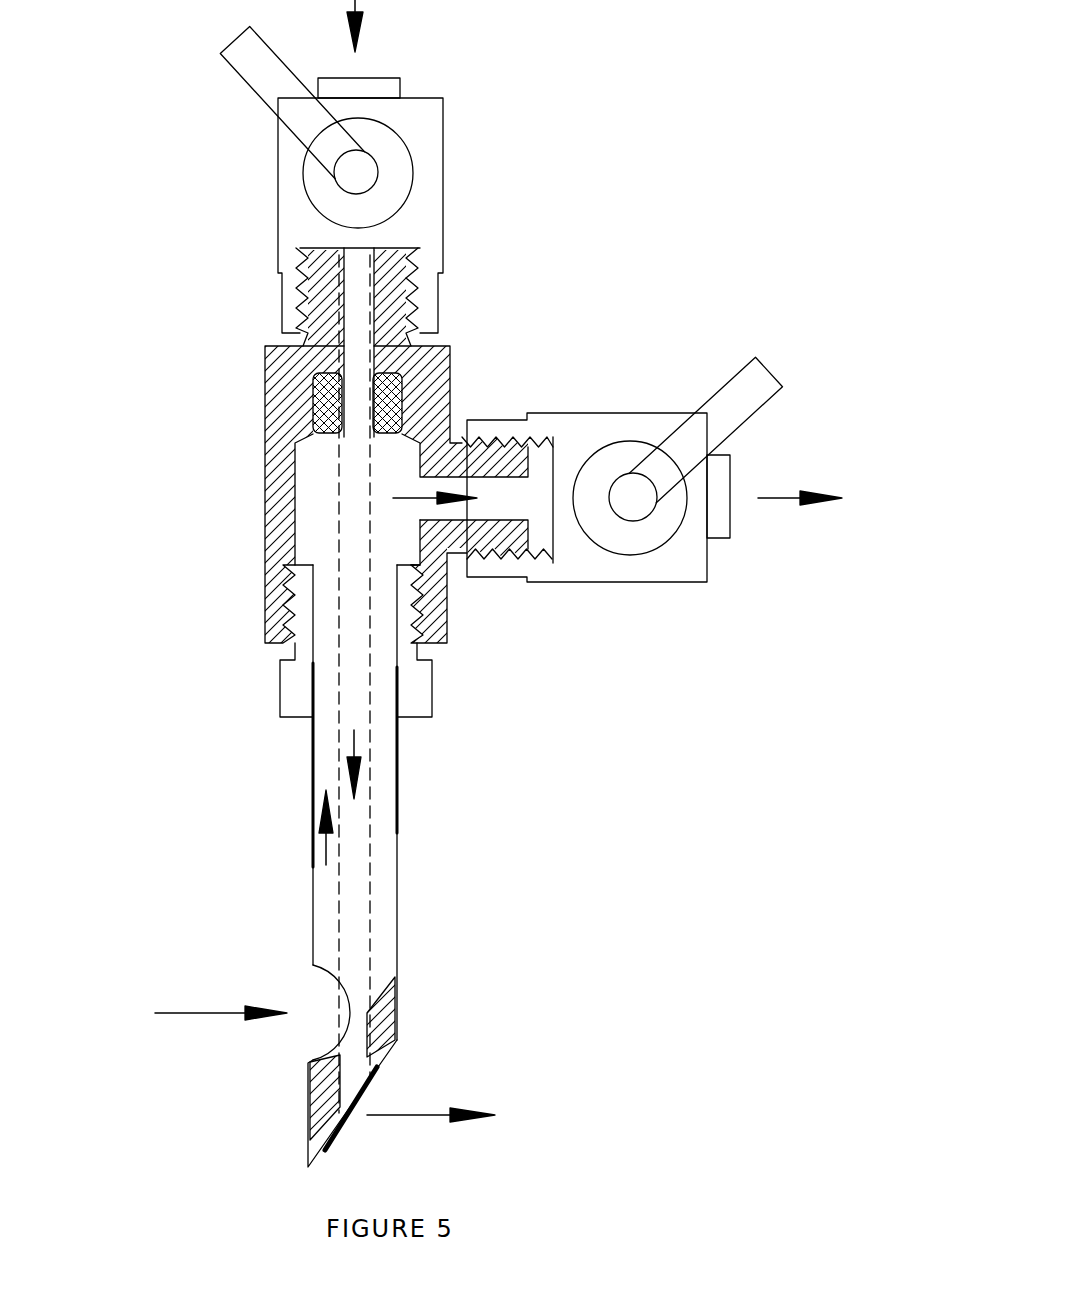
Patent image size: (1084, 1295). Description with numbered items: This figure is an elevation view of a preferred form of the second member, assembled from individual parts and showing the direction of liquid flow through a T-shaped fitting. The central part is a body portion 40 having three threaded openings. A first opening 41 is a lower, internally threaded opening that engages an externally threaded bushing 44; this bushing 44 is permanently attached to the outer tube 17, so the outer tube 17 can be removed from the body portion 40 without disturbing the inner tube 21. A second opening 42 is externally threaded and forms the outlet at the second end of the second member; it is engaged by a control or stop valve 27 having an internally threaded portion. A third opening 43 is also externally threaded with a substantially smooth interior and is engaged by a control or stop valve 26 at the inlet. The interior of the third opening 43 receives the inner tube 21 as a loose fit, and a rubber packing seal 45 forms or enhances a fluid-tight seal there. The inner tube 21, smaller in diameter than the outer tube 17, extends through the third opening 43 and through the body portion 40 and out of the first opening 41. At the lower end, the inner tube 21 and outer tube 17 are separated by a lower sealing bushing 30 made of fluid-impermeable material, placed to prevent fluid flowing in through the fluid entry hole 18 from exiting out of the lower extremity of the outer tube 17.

The control or stop valve 26 is at (445, 117).
The third opening 43 is at (360, 272).
The body portion 40 is at (265, 503).
The rubber packing seal 45 is at (328, 415).
The second opening 42 is at (489, 498).
The first opening 41 is at (402, 550).
The control or stop valve 27 is at (640, 412).
The externally threaded bushing 44 is at (280, 692).
The outer tube 17 is at (313, 923).
The inner tube 21 is at (372, 875).
The fluid entry hole 18 is at (330, 995).
The lower sealing bushing 30 is at (393, 997).